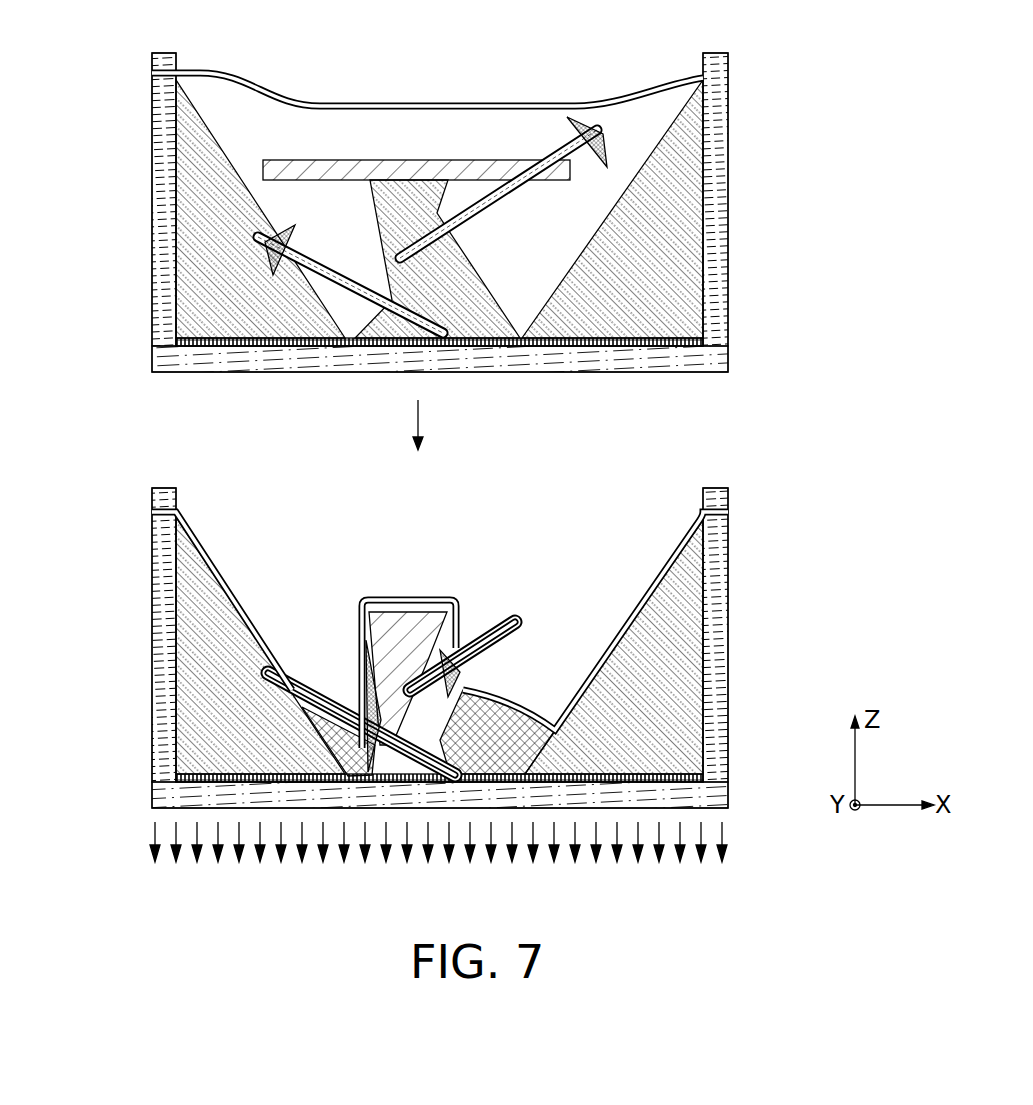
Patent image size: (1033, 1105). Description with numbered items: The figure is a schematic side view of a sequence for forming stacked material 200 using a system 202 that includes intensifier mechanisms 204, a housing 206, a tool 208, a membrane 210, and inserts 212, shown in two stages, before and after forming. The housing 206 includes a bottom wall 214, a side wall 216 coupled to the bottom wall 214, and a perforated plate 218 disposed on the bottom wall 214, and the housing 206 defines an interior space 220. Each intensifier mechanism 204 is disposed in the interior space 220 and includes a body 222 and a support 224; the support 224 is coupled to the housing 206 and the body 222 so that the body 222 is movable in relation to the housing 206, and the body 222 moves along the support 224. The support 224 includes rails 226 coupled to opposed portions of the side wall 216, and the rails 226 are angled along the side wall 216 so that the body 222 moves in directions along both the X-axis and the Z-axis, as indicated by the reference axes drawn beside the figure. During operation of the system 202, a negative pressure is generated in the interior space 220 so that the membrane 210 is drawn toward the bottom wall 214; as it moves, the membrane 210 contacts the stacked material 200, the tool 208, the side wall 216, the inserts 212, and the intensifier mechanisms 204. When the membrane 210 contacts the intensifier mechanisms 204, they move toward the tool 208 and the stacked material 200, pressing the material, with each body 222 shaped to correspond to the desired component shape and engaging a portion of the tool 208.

The stacked material 200 is at (372, 158).
The system 202 is at (108, 46).
The intensifier mechanism 204 is at (585, 120).
The housing 206 is at (152, 148).
The tool 208 is at (500, 340).
The membrane 210 is at (318, 92).
The insert 212 is at (240, 290).
The bottom wall 214 is at (205, 350).
The side wall 216 is at (728, 200).
The perforated plate 218 is at (668, 362).
The interior space 220 is at (245, 100).
The body 222 is at (610, 150).
The support 224 is at (545, 165).
The rail 226 is at (515, 195).